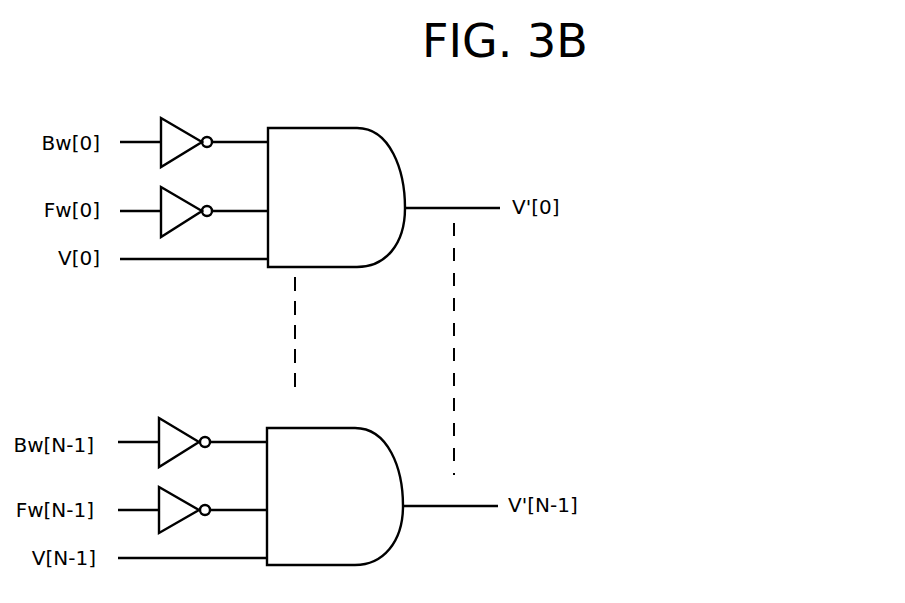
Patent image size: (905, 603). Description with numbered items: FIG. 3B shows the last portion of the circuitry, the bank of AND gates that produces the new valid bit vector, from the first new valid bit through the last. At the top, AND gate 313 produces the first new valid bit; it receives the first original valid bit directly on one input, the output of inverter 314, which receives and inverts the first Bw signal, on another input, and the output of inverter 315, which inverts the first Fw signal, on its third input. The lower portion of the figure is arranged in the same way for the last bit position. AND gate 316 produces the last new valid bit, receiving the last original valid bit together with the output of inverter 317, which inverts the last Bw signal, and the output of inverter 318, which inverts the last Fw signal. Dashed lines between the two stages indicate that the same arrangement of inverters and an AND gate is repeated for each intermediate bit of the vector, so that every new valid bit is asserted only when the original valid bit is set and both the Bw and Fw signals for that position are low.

The AND gate 313 is at (308, 127).
The inverter 314 is at (188, 130).
The inverter 315 is at (186, 200).
The AND gate 316 is at (307, 426).
The inverter 317 is at (187, 428).
The inverter 318 is at (185, 500).